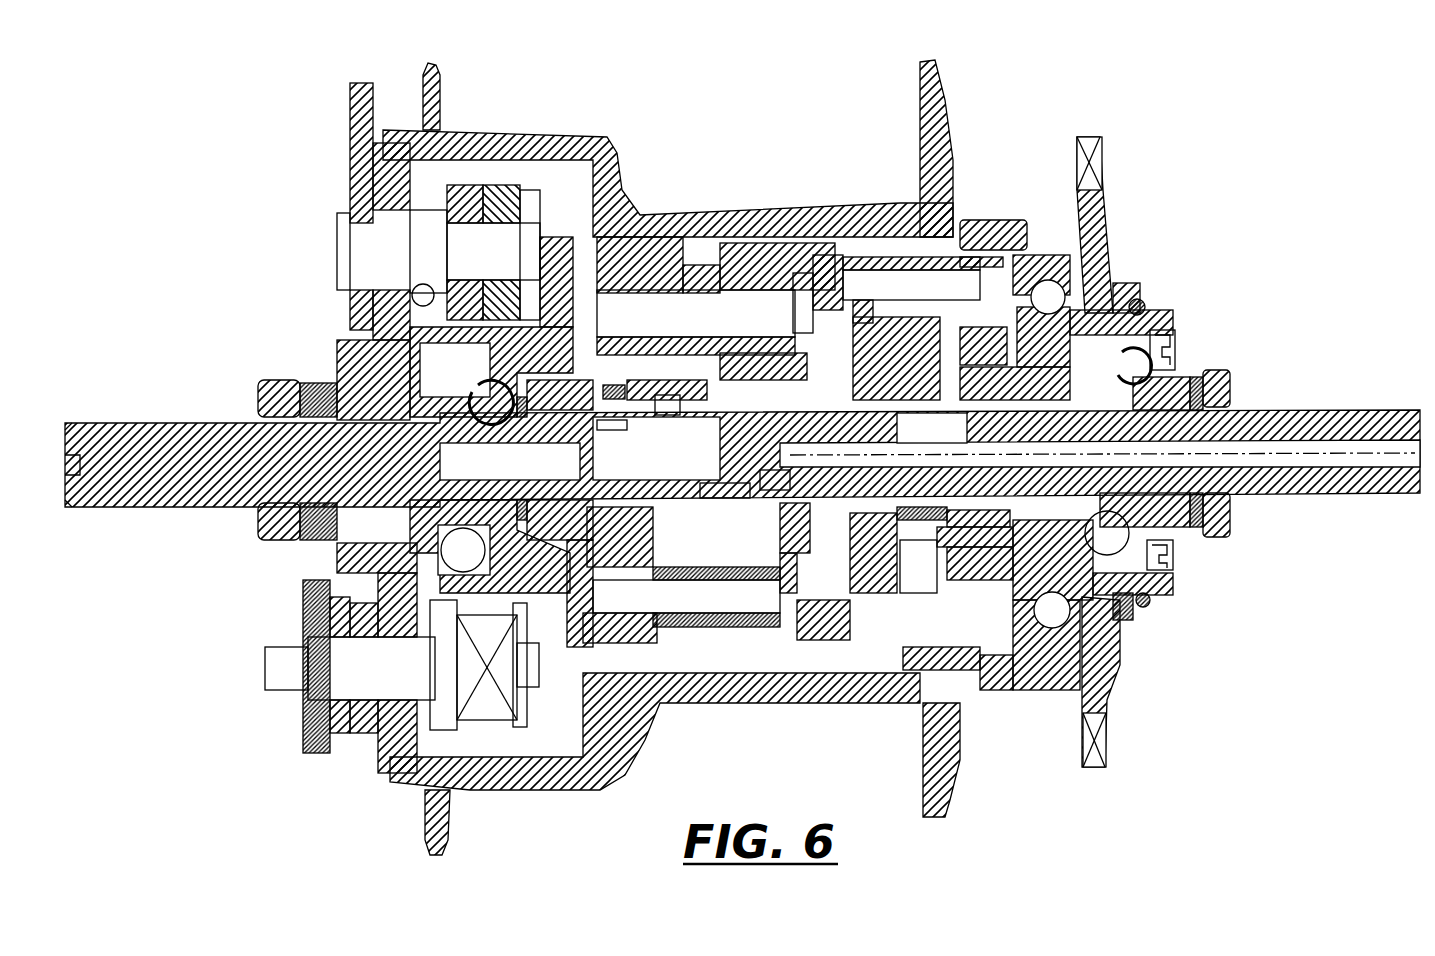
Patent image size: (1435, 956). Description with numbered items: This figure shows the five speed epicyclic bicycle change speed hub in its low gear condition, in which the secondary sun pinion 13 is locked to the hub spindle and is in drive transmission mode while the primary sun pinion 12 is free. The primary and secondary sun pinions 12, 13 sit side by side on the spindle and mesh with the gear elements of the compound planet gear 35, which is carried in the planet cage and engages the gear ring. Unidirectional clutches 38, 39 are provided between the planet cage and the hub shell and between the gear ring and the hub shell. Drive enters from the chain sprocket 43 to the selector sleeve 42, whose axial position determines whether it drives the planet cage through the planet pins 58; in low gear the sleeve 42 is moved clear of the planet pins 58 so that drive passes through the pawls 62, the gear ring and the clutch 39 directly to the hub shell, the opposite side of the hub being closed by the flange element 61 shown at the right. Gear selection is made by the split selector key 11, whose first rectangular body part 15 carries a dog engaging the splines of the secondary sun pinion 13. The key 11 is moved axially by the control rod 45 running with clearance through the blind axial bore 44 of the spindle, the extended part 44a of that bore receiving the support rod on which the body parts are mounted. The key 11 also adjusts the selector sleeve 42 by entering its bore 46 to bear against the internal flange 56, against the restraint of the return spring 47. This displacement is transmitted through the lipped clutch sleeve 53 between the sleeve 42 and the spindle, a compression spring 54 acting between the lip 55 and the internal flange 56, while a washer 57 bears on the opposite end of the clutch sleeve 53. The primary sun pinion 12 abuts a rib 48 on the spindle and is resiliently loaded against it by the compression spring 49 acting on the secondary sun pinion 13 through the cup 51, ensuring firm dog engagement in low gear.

The split selector key 11 is at (818, 418).
The primary sun pinion 12 is at (790, 470).
The secondary sun pinion 13 is at (667, 400).
The first rectangular body part 15 is at (745, 490).
The compound planet gear 35 is at (715, 245).
The unidirectional clutch 38 is at (625, 265).
The unidirectional clutch 39 is at (880, 262).
The selector sleeve 42 is at (897, 330).
The chain sprocket 43 is at (1103, 257).
The blind axial bore 44 is at (1350, 437).
The part of bore 44a is at (580, 450).
The control rod 45 is at (1367, 453).
The bore 46 is at (877, 507).
The return spring 47 is at (1173, 317).
The rib 48 is at (823, 503).
The compression spring 49 is at (607, 417).
The cup 51 is at (617, 393).
The lipped clutch sleeve 53 is at (957, 503).
The compression spring 54 is at (927, 507).
The lip 55 is at (900, 400).
The internal flange 56 is at (953, 413).
The washer 57 is at (987, 507).
The planet pins 58 is at (700, 458).
The spoke flange 61 is at (1113, 633).
The pawls 62 is at (963, 327).